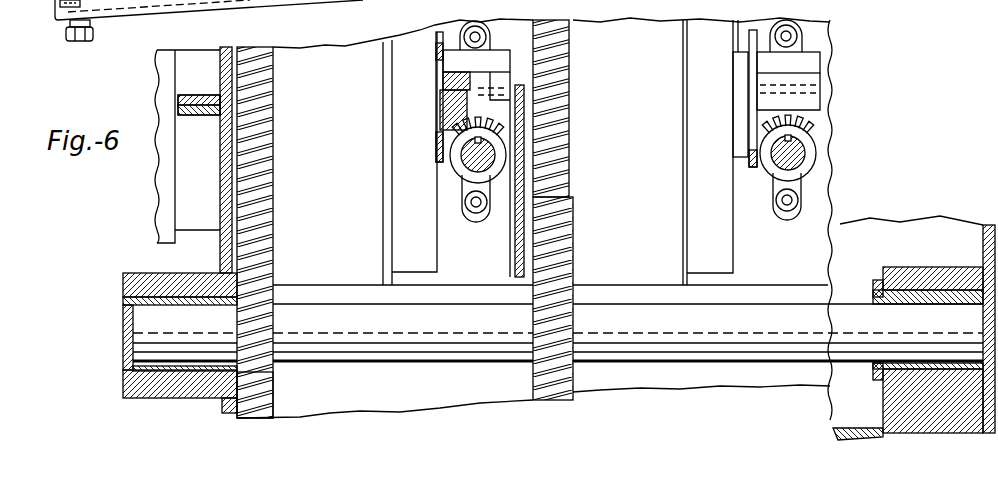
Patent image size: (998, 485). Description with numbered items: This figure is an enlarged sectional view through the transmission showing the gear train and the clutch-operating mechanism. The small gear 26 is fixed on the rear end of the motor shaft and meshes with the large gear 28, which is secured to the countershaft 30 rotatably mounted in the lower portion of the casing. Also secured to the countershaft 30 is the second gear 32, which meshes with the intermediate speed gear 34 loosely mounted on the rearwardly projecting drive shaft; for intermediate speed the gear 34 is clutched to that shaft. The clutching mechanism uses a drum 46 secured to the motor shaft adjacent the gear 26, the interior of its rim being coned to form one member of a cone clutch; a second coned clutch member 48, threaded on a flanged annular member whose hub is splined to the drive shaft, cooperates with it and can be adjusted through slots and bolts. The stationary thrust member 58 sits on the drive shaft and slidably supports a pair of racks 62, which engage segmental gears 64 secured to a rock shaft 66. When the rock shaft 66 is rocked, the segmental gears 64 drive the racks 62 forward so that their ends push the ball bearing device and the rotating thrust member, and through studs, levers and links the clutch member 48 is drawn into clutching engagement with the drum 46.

The small gear 26 is at (265, 98).
The large gear 28 is at (267, 374).
The countershaft 30 is at (757, 313).
The second gear 32 is at (558, 277).
The intermediate speed gear 34 is at (556, 72).
The drum 46 is at (382, 284).
The second coned clutch member 48 is at (422, 262).
The thrust member 58 is at (500, 50).
The racks 62 is at (440, 97).
The segmental gears 64 is at (462, 135).
The rock shaft 66 is at (460, 163).